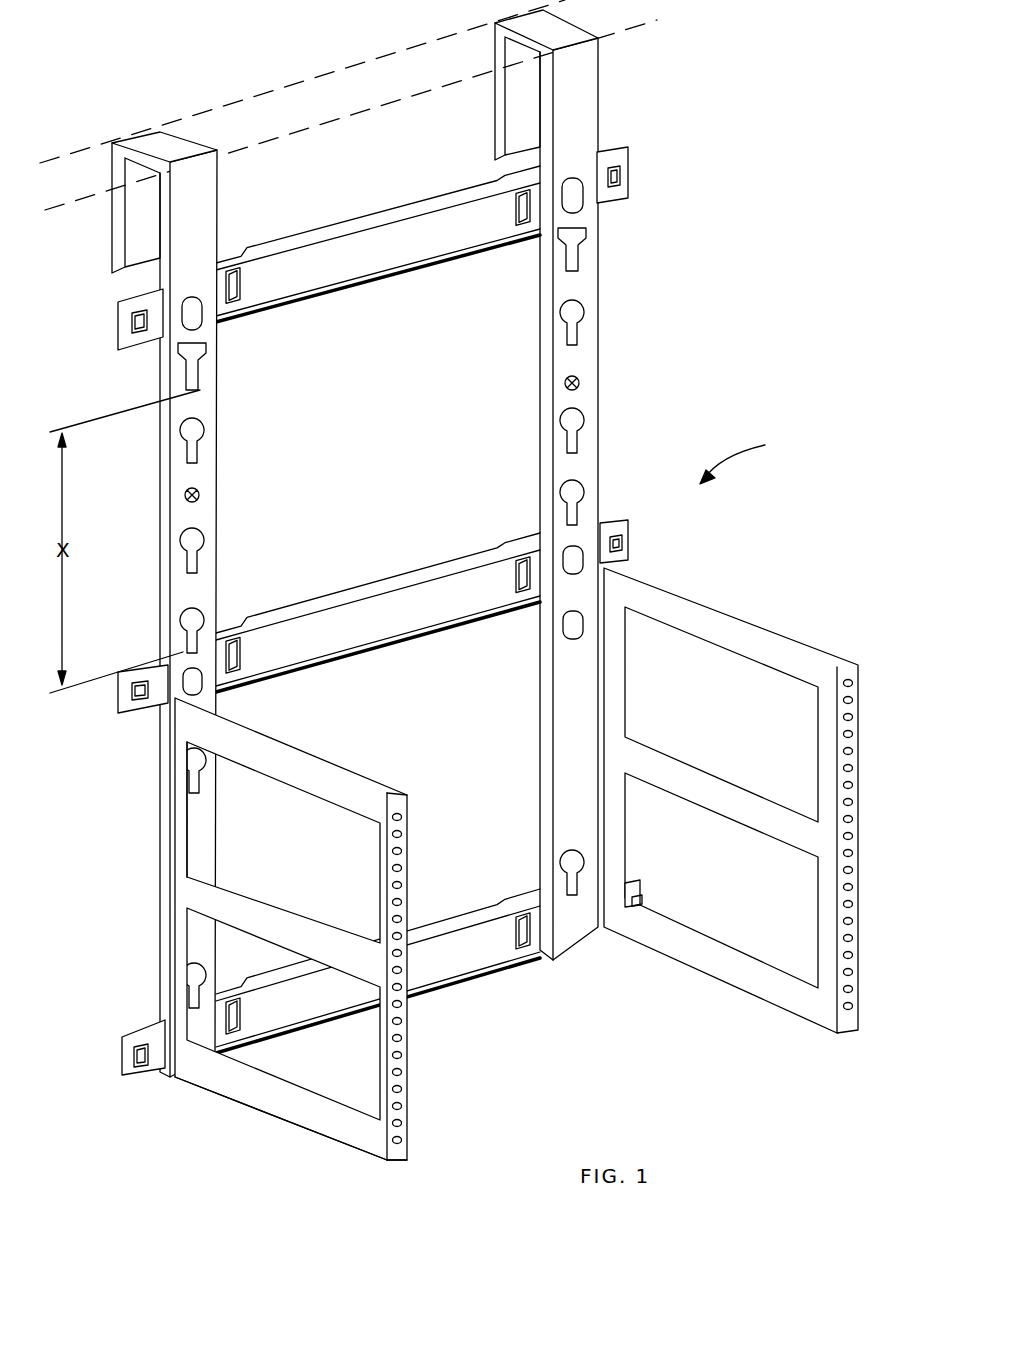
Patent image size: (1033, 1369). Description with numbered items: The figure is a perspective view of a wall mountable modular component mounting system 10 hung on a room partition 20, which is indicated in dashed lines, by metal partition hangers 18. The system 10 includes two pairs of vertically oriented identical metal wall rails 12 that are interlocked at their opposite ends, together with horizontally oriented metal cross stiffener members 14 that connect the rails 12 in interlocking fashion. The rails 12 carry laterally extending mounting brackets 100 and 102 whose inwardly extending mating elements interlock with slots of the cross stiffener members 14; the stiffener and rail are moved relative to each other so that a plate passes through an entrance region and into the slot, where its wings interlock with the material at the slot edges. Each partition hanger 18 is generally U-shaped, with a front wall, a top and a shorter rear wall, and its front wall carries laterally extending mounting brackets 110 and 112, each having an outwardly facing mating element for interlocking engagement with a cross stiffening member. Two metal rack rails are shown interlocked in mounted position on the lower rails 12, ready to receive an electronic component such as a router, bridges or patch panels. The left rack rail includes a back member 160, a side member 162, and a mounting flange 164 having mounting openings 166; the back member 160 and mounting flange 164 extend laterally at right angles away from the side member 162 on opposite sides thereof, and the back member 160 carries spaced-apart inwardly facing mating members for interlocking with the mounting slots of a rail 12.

The modular component mounting system 10 is at (747, 456).
The wall rail 12 is at (221, 462).
The cross stiffener member 14 is at (352, 228).
The partition hanger 18 is at (208, 223).
The room partition 20 is at (304, 85).
The mounting bracket 100 is at (120, 672).
The mounting bracket 102 is at (607, 521).
The mounting bracket 110 is at (123, 305).
The mounting bracket 112 is at (611, 146).
The back member 160 is at (203, 848).
The panel bottom bar 162 is at (291, 1117).
The mounting flange 164 is at (408, 1067).
The mounting opening 166 is at (408, 1135).